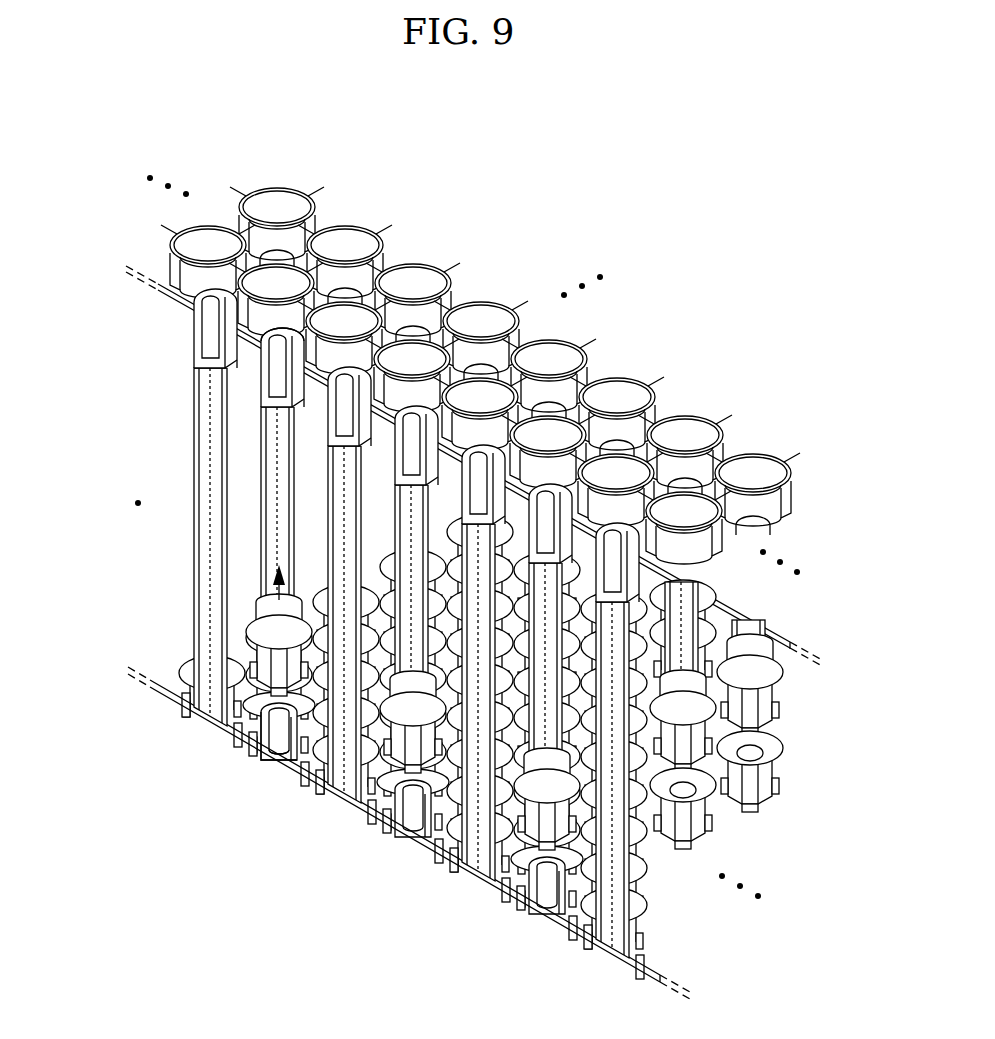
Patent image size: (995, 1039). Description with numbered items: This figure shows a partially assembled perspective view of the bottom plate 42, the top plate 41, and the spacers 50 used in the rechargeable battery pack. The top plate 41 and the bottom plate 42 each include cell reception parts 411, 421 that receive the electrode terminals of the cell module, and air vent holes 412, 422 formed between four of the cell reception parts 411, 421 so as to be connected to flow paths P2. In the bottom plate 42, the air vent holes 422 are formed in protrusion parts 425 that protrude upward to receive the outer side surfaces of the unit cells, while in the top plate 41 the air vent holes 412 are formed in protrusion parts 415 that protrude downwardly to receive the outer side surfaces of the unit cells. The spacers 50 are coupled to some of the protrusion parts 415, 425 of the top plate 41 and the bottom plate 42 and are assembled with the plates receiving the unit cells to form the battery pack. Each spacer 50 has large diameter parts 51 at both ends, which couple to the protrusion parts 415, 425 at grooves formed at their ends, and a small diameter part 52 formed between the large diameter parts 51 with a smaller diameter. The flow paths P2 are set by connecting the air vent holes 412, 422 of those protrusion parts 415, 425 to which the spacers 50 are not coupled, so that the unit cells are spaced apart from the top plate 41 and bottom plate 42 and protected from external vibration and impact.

The top plate 41 is at (617, 380).
The cell reception part 411 is at (320, 373).
The air vent hole 412 is at (283, 330).
The protrusion part 415 is at (260, 370).
The bottom plate 42 is at (455, 757).
The cell reception part 421 is at (320, 755).
The air vent hole 422 is at (278, 753).
The protrusion part 425 is at (263, 727).
The spacer 50 is at (163, 507).
The large diameter part 51 is at (187, 342).
The small diameter part 52 is at (193, 448).
The flow path P2 is at (277, 590).